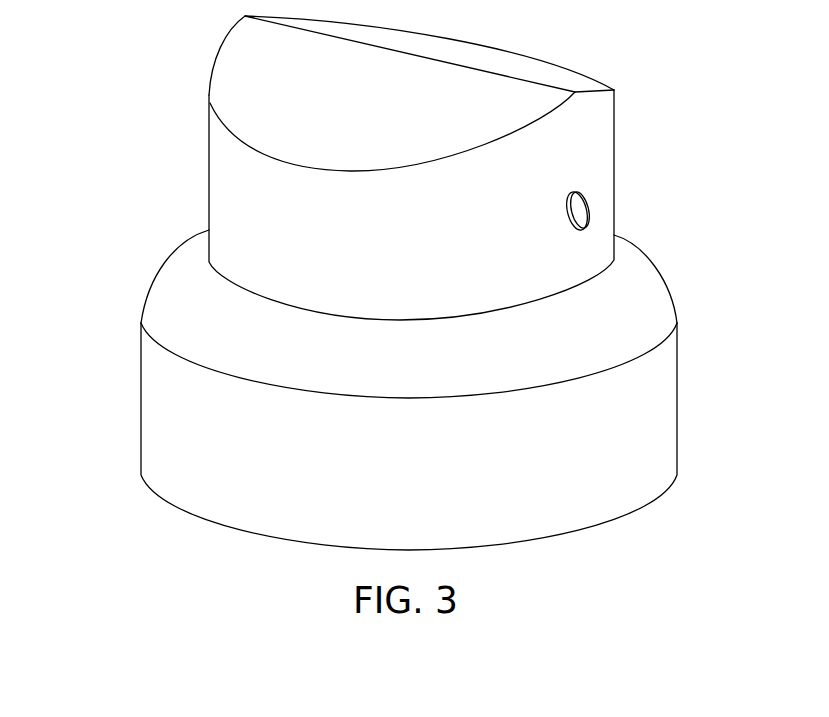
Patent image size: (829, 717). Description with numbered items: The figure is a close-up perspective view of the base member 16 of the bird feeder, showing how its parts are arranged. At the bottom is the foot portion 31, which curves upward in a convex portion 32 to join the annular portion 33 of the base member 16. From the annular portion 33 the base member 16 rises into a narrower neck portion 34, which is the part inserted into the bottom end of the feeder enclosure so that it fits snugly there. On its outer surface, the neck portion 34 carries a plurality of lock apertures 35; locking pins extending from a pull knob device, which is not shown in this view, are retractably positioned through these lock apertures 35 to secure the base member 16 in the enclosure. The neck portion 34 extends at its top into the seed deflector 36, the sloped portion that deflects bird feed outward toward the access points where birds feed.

The base member 16 is at (176, 45).
The foot portion 31 is at (148, 418).
The convex portion 32 is at (643, 320).
The annular portion 33 is at (183, 275).
The neck portion 34 is at (209, 133).
The lock apertures 35 is at (590, 207).
The seed deflector 36 is at (545, 68).